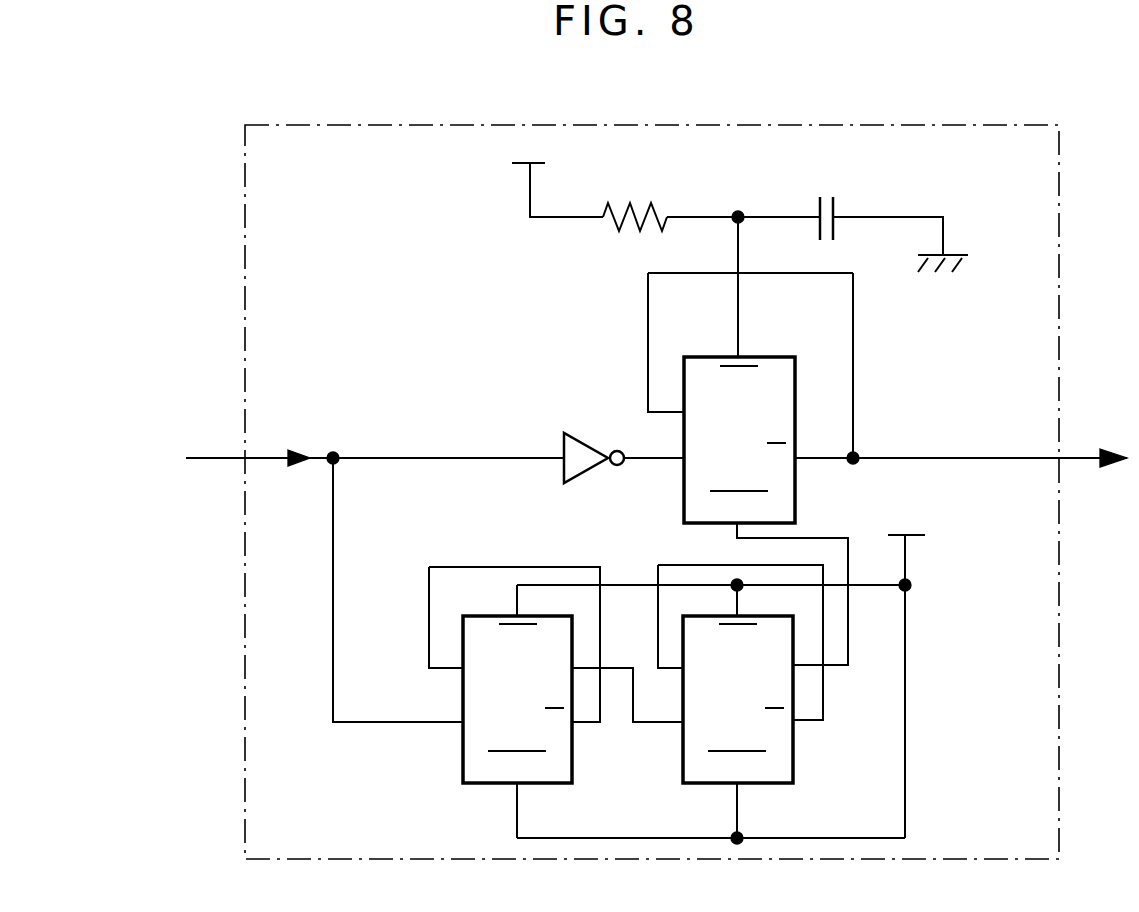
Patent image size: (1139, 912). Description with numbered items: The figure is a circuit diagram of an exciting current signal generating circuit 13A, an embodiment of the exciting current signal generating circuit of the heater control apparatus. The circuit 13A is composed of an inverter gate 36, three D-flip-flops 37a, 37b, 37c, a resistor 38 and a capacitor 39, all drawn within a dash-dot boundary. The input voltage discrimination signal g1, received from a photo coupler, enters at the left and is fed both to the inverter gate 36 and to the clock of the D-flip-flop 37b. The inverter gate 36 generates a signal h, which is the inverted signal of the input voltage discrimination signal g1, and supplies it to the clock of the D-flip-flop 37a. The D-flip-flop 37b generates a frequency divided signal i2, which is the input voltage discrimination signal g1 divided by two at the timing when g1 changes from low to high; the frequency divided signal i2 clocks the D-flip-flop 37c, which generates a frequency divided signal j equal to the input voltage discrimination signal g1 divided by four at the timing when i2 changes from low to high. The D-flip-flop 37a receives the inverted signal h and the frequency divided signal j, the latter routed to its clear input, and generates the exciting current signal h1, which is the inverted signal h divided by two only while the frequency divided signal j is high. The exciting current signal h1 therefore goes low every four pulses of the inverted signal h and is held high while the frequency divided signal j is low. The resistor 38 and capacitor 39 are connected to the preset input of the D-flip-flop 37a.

The exciting current signal generating circuit 13A is at (885, 125).
The inverter gate 36 is at (580, 432).
The D-flip-flop 37a is at (777, 357).
The D-flip-flop 37b is at (468, 786).
The D-flip-flop 37c is at (795, 762).
The resistor 38 is at (633, 207).
The capacitor 39 is at (833, 208).
The input voltage discrimination signal g1 is at (277, 459).
The inverted signal h is at (648, 461).
The exciting current signal h1 is at (897, 457).
The frequency divided signal i2 is at (653, 726).
The frequency divided signal j is at (826, 538).